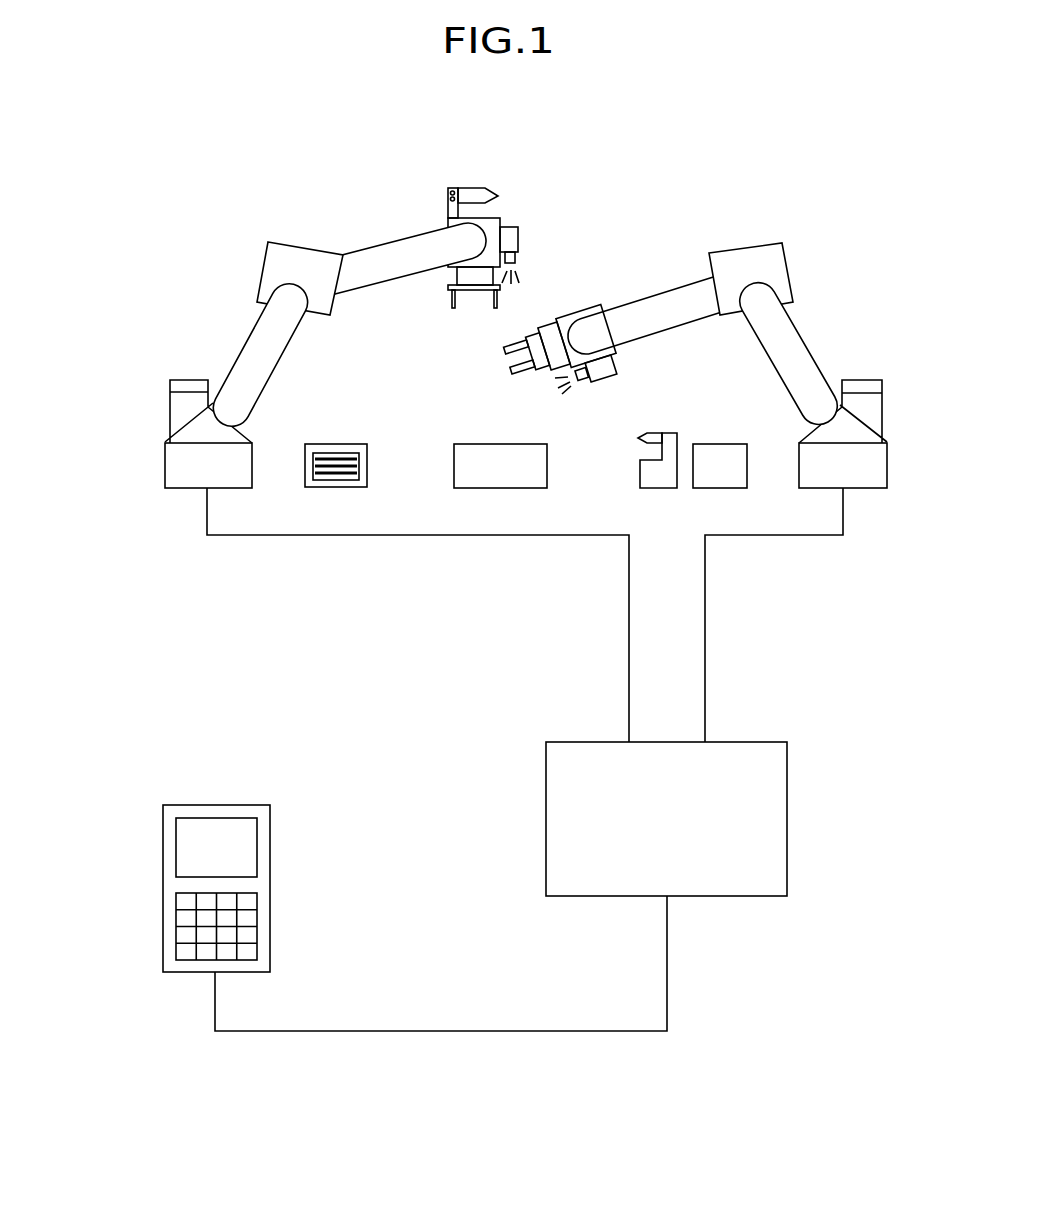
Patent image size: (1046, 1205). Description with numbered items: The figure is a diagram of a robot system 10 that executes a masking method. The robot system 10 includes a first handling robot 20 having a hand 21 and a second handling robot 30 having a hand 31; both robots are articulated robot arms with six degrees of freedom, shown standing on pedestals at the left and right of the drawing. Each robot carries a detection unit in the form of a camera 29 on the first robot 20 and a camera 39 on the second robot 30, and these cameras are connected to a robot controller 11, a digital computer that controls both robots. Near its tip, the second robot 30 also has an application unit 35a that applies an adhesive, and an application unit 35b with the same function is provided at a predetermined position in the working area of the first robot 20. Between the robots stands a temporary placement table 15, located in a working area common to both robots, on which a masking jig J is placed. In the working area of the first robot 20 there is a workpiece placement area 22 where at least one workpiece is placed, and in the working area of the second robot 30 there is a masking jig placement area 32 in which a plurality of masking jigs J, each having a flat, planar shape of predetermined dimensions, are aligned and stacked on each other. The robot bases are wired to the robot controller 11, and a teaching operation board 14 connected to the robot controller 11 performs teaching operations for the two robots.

The robot system 10 is at (140, 228).
The robot controller 11 is at (787, 827).
The teaching operation board 14 is at (271, 937).
The temporary placement table 15 is at (540, 469).
The first handling robot 20 is at (845, 262).
The hand 21 is at (503, 347).
The workpiece placement area 22 is at (718, 475).
The camera 29 is at (600, 372).
The second handling robot 30 is at (236, 250).
The hand 31 is at (496, 305).
The masking jig placement area 32 is at (332, 487).
The application unit 35a is at (485, 190).
The application unit 35b is at (655, 432).
The camera 39 is at (518, 240).
The masking jig J is at (327, 456).